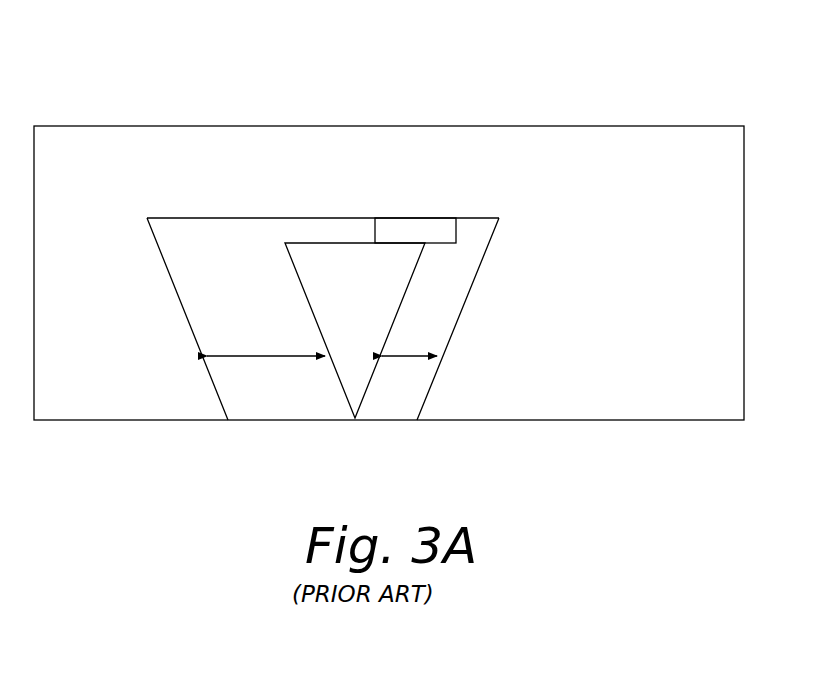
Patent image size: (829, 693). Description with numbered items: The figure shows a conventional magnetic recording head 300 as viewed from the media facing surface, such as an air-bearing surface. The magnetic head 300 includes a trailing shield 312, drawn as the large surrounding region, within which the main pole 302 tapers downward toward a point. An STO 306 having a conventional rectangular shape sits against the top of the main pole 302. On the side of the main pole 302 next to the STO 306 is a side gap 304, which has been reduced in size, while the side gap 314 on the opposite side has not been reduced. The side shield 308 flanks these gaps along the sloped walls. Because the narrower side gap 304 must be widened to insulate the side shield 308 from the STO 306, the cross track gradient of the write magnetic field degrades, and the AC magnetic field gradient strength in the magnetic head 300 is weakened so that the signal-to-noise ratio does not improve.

The magnetic recording head 300 is at (133, 30).
The main pole 302 is at (303, 268).
The side gap 304 is at (403, 358).
The STO 306 is at (433, 235).
The side shield 308 is at (178, 323).
The trailing shield 312 is at (68, 135).
The side gap 314 is at (268, 357).